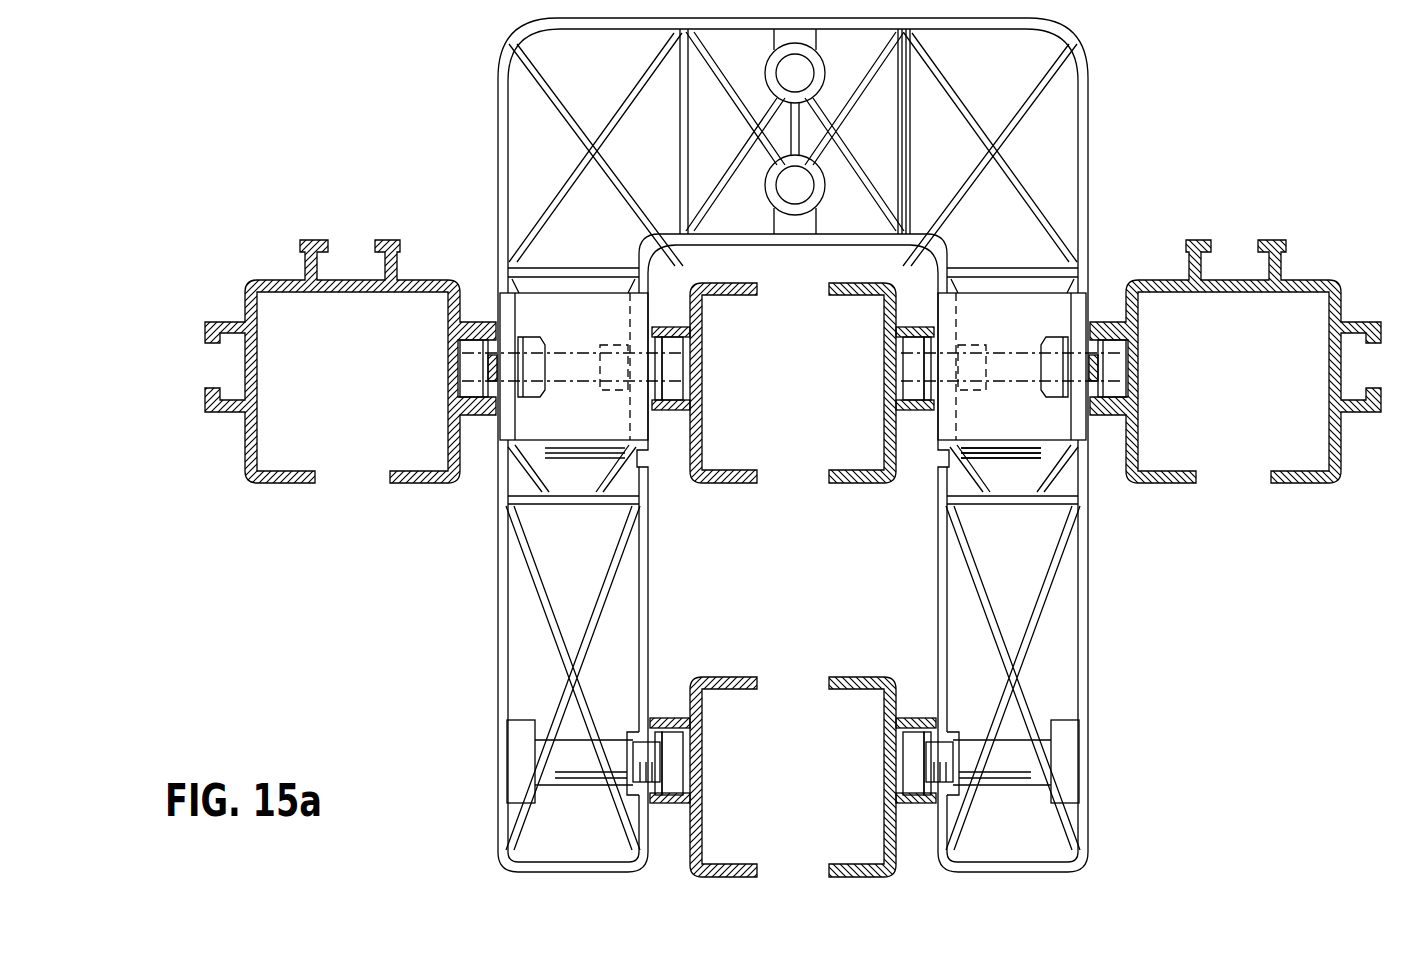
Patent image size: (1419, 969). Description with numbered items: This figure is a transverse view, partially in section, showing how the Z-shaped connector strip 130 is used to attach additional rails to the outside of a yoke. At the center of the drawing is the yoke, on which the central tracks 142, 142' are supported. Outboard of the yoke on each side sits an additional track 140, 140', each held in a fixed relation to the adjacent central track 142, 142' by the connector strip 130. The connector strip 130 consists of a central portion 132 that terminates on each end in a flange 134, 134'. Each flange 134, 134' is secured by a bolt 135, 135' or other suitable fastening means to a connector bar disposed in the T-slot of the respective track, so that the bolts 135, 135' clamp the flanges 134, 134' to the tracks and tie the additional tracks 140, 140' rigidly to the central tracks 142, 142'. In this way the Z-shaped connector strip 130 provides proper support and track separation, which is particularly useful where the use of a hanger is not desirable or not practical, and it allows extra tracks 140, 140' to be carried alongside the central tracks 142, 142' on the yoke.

The Z-shaped connector strip 130 is at (1008, 450).
The central portion 132 is at (983, 415).
The flange 134 is at (976, 342).
The flange 134' is at (805, 419).
The bolt 135 is at (980, 366).
The bolt 135' is at (1040, 349).
The additional track 140 is at (321, 361).
The additional track 140' is at (1250, 367).
The central track 142 is at (704, 419).
The central track 142' is at (881, 419).